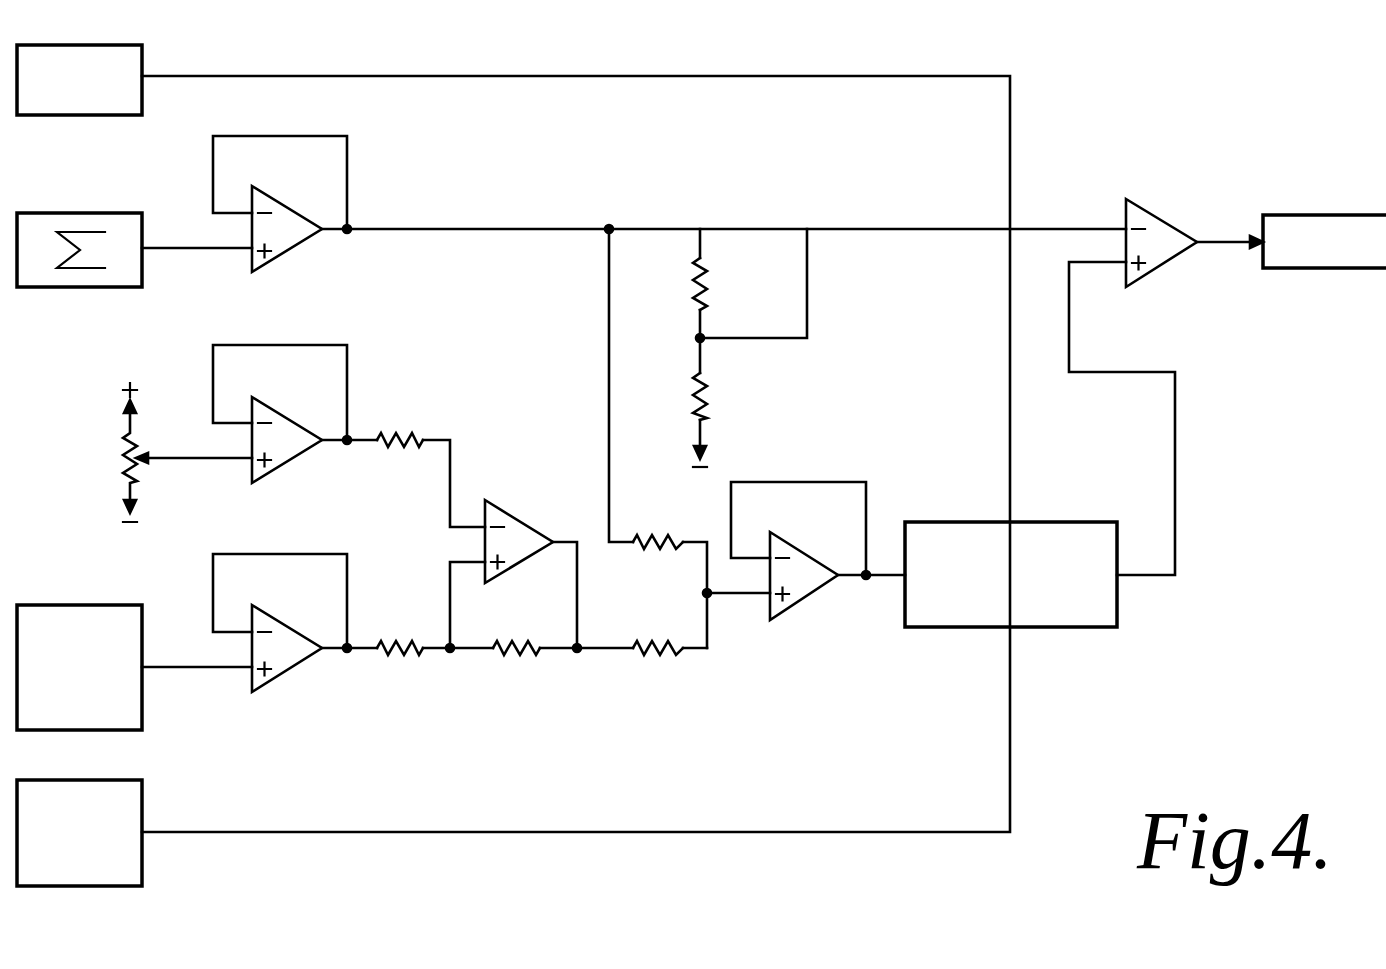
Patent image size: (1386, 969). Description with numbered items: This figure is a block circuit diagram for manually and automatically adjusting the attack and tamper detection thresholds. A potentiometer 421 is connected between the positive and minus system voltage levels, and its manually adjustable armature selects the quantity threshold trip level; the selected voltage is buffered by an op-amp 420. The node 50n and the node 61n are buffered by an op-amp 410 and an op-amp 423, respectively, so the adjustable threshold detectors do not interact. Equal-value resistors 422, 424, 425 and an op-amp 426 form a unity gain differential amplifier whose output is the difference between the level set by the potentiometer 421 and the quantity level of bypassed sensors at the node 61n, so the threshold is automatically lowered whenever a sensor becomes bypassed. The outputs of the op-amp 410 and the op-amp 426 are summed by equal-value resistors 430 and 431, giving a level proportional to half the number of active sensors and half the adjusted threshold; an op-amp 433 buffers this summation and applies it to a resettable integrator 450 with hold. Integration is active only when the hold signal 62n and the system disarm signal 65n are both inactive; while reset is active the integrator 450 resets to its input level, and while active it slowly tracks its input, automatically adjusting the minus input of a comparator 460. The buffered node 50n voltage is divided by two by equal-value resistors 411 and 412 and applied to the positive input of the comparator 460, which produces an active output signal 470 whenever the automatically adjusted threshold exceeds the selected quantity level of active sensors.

The hold signal 62n is at (142, 101).
The node 50n is at (142, 272).
The node 61n is at (142, 706).
The system disarm signal 65n is at (142, 868).
The op-amp 410 is at (290, 252).
The resistor 411 is at (712, 397).
The resistor 412 is at (712, 282).
The op-amp 420 is at (290, 462).
The potentiometer 421 is at (125, 456).
The resistor 422 is at (398, 433).
The op-amp 423 is at (290, 670).
The resistor 424 is at (398, 641).
The resistor 425 is at (515, 655).
The op-amp 426 is at (521, 522).
The resistor 430 is at (657, 550).
The resistor 431 is at (657, 655).
The op-amp 433 is at (800, 603).
The resettable integrator 450 is at (951, 521).
The comparator 460 is at (1162, 218).
The output signal 470 is at (1326, 214).